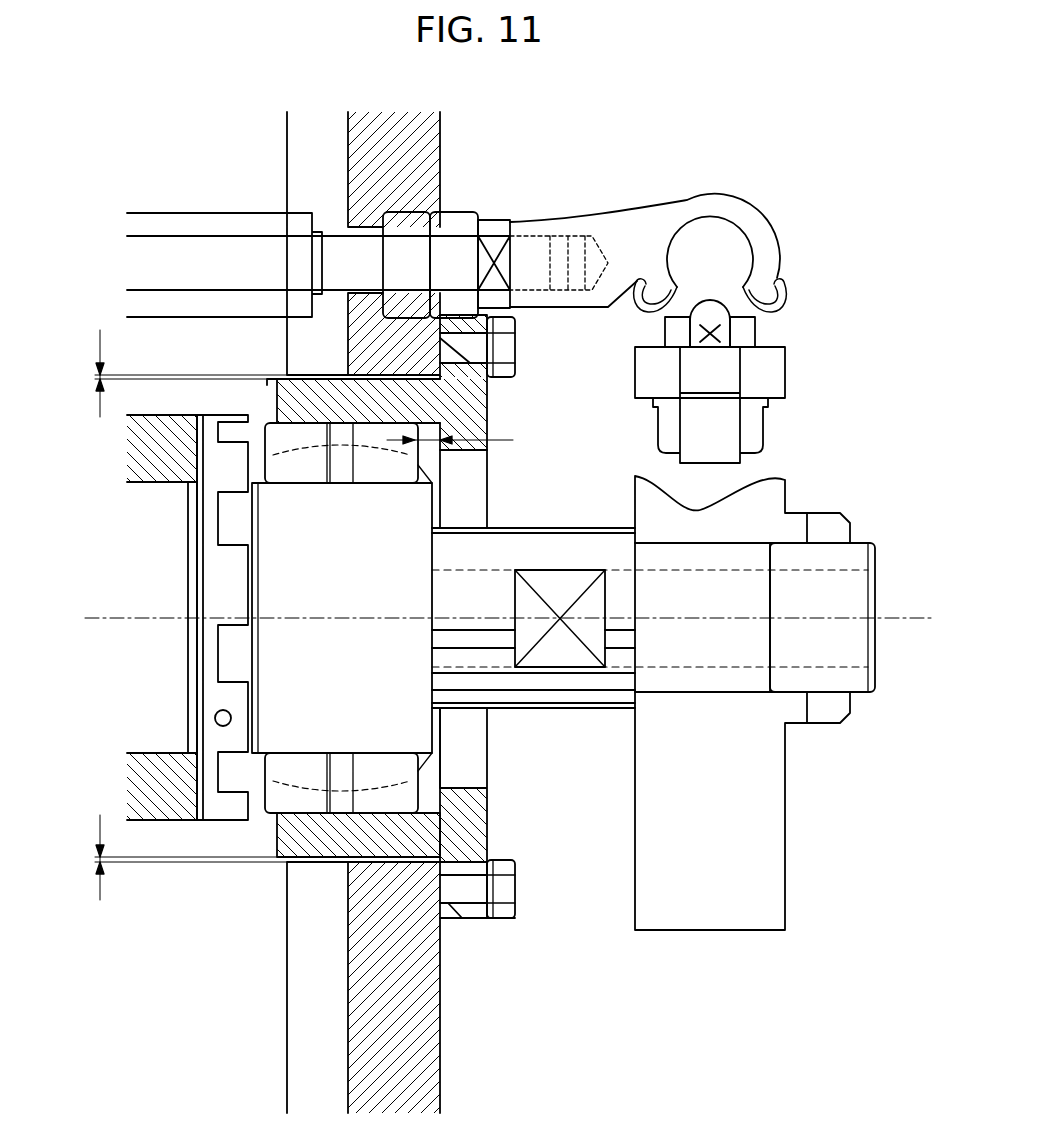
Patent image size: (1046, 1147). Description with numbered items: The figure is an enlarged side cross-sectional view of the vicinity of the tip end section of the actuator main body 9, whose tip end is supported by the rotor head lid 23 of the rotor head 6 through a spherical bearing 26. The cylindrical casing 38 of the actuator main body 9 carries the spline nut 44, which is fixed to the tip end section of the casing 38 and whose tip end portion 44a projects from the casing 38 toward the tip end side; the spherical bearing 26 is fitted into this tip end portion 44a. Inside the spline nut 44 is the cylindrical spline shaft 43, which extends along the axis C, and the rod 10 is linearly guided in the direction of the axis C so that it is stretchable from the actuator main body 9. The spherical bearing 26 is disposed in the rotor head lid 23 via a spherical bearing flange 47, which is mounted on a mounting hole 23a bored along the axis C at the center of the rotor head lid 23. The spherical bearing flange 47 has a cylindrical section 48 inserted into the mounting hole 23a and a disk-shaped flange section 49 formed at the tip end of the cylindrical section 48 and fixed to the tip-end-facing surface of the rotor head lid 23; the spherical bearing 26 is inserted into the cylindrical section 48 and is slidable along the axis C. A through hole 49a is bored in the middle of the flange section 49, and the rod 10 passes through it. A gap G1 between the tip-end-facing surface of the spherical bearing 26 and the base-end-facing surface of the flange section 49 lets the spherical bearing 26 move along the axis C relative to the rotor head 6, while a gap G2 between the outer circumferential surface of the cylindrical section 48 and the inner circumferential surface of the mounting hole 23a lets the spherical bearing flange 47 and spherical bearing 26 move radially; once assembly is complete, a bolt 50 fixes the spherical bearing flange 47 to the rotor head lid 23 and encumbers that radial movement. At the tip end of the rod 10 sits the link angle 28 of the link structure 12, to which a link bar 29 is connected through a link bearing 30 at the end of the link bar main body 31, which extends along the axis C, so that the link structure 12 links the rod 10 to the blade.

The rotor head lid 23 is at (432, 133).
The rotor head 6 is at (434, 597).
The link bar 29 is at (216, 212).
The link bar main body 31 is at (256, 250).
The bolt 50 is at (500, 325).
The link structure 12 is at (688, 197).
The link bearing 30 is at (752, 218).
The mounting hole 23a is at (462, 340).
The spherical bearing 26 is at (405, 405).
The through hole 49a is at (452, 450).
The tip end portion 44a is at (397, 720).
The spline nut 44 is at (441, 636).
The rod 10 is at (580, 556).
The spline shaft 43 is at (653, 577).
The link angle 28 is at (770, 827).
The axis C is at (893, 612).
The actuator main body 9 is at (232, 583).
The casing 38 is at (162, 466).
The spherical bearing flange 47 is at (487, 817).
The flange section 49 is at (473, 840).
The cylindrical section 48 is at (390, 863).
The gap G1 is at (456, 430).
The gap G2 is at (176, 615).